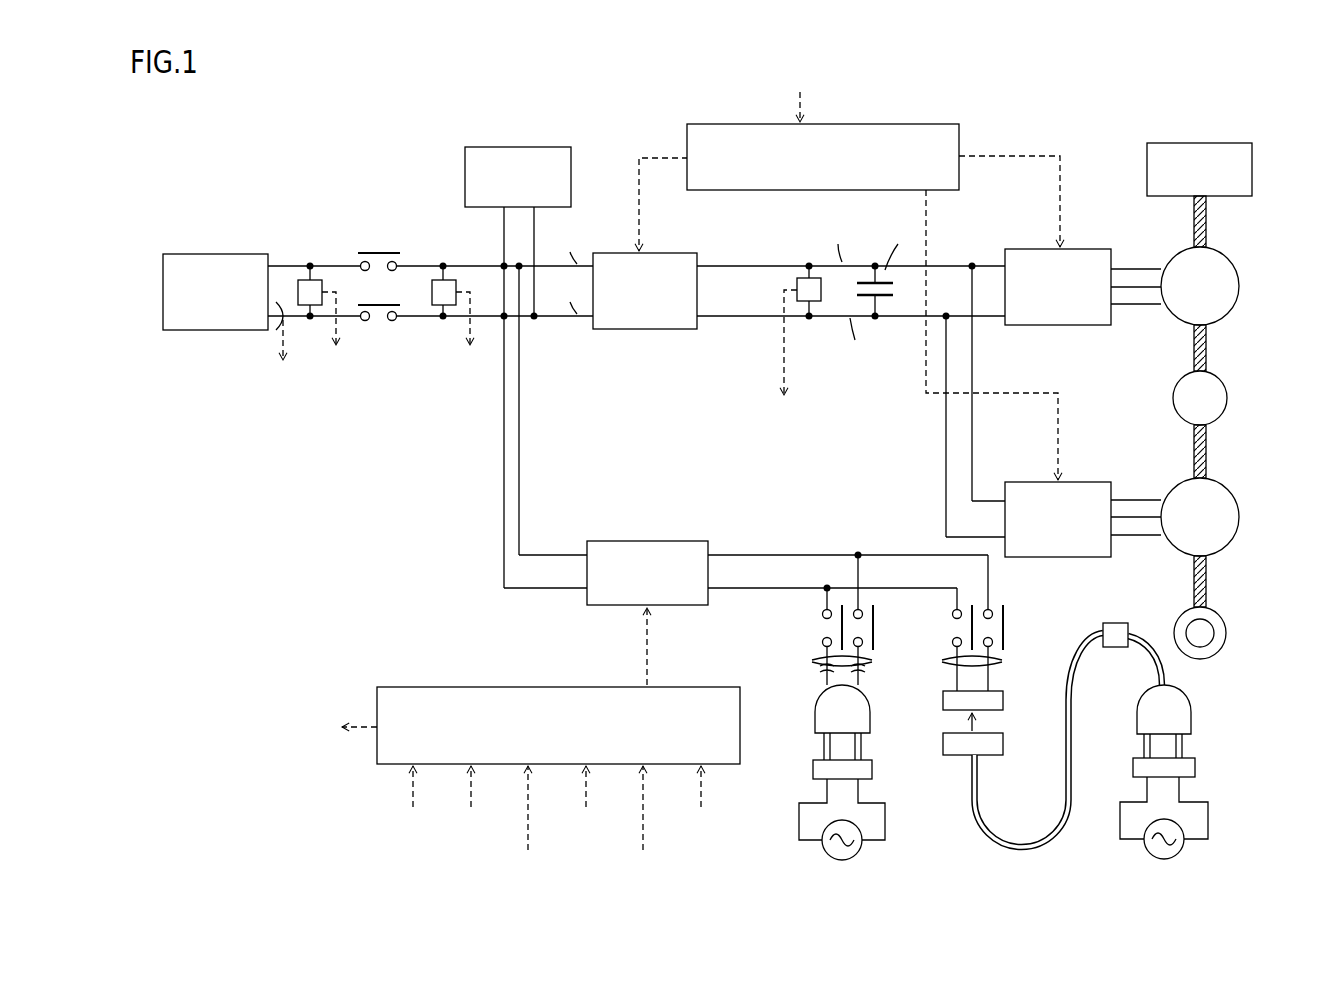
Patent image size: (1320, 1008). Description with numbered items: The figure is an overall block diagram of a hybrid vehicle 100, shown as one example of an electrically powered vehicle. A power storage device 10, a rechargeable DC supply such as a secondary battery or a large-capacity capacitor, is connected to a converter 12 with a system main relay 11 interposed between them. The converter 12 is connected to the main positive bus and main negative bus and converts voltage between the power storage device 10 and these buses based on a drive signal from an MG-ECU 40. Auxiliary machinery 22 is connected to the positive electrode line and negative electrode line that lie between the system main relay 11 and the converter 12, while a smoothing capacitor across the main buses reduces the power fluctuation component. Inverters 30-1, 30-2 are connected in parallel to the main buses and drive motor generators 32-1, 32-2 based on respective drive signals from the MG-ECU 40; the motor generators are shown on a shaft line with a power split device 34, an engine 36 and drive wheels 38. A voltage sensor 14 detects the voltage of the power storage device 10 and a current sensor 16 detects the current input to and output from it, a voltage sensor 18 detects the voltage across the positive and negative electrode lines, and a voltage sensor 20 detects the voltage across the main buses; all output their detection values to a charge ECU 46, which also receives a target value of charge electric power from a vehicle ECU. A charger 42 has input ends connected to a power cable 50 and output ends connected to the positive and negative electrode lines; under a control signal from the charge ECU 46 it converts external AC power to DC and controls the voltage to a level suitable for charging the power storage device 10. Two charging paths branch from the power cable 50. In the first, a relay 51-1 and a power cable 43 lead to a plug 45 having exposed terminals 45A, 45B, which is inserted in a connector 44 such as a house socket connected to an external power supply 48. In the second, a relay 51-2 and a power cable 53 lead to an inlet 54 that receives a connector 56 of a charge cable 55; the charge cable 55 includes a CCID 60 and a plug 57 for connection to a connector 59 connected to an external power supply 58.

The hybrid vehicle 100 is at (222, 154).
The power storage device 10 is at (215, 256).
The system main relay 11 is at (378, 247).
The converter 12 is at (668, 253).
The voltage sensor 14 is at (305, 278).
The current sensor 16 is at (280, 328).
The voltage sensor 18 is at (440, 278).
The voltage sensor 20 is at (821, 300).
The auxiliary machinery 22 is at (525, 147).
The inverter 30-1 is at (1085, 249).
The inverter 30-2 is at (1085, 482).
The motor generator 32-1 is at (1230, 252).
The motor generator 32-2 is at (1230, 484).
The power split device 34 is at (1220, 380).
The engine 36 is at (1147, 172).
The drive wheels 38 is at (1227, 633).
The MG-ECU 40 is at (908, 124).
The charger 42 is at (664, 541).
The power cable 43 is at (870, 668).
The connector 44 is at (872, 768).
The plug 45 is at (870, 721).
The terminal 45A is at (824, 748).
The terminal 45B is at (861, 748).
The charge ECU 46 is at (688, 687).
The external power supply 48 is at (858, 854).
The power cable 50 is at (757, 600).
The relay 51-1 is at (873, 625).
The relay 51-2 is at (1003, 625).
The power cable 53 is at (1000, 665).
The inlet 54 is at (1003, 705).
The charge cable 55 is at (1145, 620).
The connector 56 is at (1003, 745).
The plug 57 is at (1191, 719).
The external power supply 58 is at (1180, 854).
The connector 59 is at (1195, 765).
The CCID 60 is at (1115, 623).